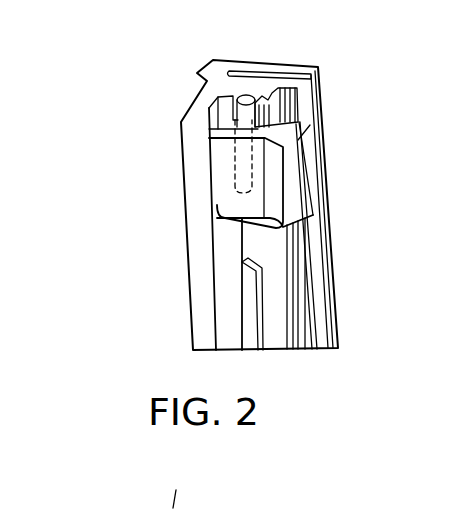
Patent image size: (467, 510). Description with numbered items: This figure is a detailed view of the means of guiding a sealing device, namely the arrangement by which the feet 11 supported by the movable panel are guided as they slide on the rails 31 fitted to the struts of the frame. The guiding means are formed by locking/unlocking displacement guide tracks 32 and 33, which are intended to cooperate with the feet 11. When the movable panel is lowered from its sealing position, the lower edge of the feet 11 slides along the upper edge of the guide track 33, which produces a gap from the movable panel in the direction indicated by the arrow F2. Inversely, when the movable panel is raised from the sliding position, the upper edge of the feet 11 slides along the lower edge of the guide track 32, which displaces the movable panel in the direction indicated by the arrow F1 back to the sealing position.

The feet 11 is at (277, 190).
The rails 31 is at (300, 85).
The guide track 32 is at (242, 209).
The guide track 33 is at (243, 270).
The arrow F1 is at (292, 160).
The arrow F2 is at (270, 239).